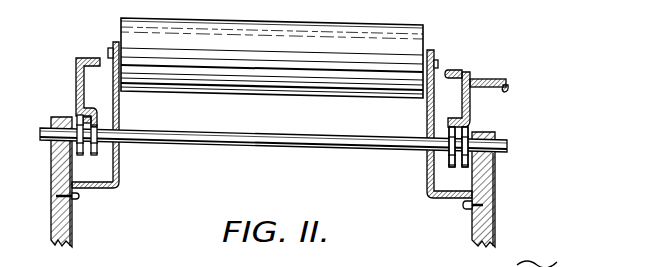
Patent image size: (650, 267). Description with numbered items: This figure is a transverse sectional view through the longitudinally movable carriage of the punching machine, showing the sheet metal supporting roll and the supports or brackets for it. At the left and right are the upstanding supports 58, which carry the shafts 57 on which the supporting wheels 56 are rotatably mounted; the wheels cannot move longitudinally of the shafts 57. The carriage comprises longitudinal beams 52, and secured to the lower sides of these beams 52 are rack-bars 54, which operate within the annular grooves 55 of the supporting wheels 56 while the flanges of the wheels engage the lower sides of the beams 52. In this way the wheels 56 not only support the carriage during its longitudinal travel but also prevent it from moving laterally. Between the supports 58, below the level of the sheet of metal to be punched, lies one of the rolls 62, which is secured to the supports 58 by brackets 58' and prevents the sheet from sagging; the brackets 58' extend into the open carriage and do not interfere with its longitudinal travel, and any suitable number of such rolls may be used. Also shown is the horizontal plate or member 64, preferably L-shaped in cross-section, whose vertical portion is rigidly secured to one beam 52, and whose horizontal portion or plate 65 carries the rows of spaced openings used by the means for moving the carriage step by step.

The longitudinal beams 52 is at (76, 70).
The rack-bars 54 is at (77, 117).
The annular grooves 55 is at (455, 168).
The supporting wheels 56 is at (448, 155).
The shafts 57 is at (470, 73).
The supports 58 is at (506, 189).
The brackets 58' is at (272, 120).
The rolls 62 is at (290, 77).
The horizontal plate or member 64 is at (506, 88).
The horizontal portion or plate 65 is at (490, 80).